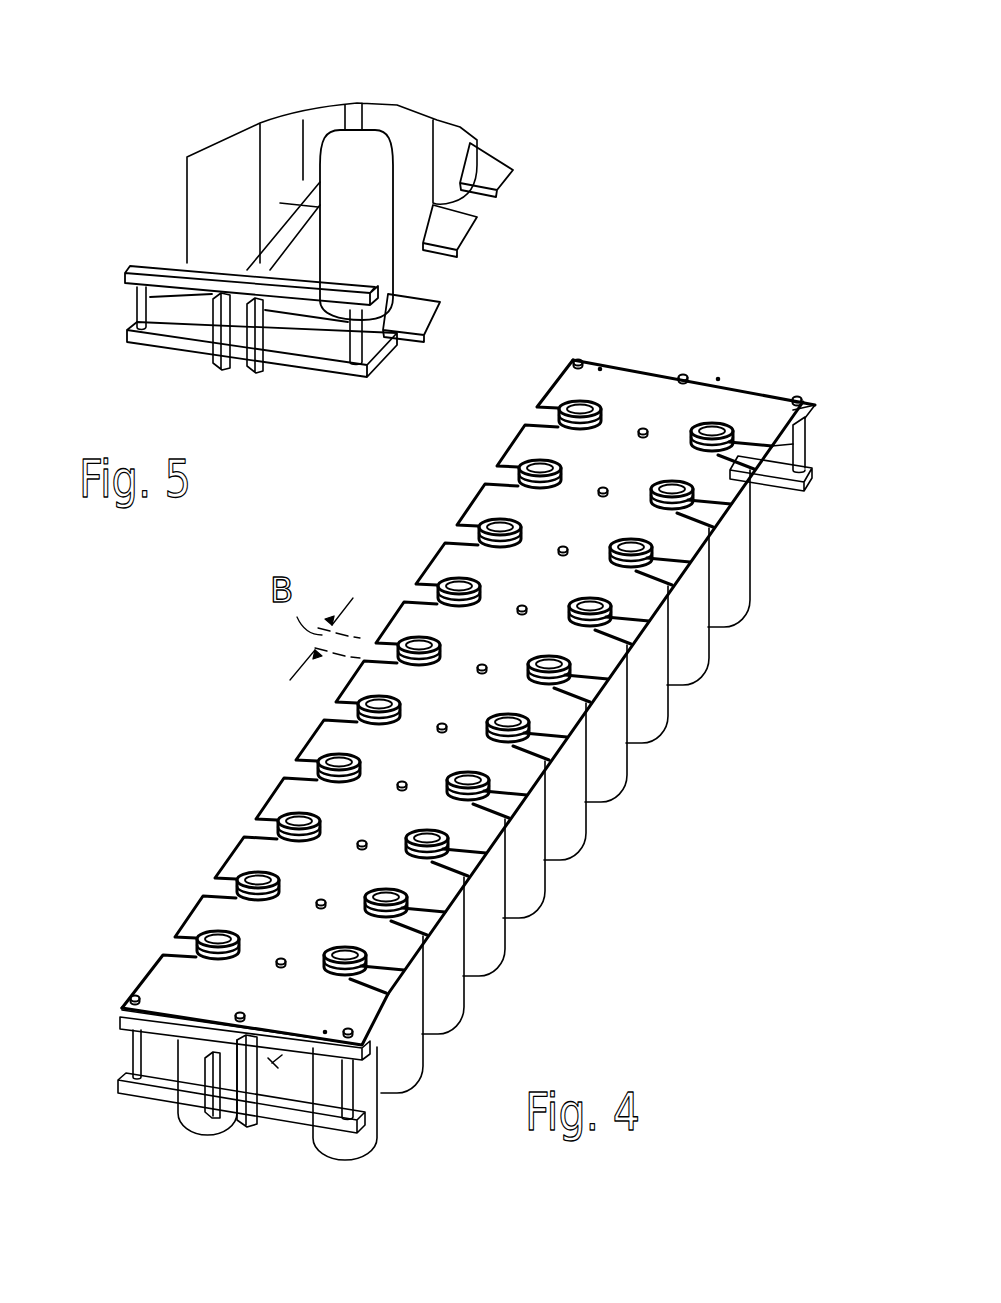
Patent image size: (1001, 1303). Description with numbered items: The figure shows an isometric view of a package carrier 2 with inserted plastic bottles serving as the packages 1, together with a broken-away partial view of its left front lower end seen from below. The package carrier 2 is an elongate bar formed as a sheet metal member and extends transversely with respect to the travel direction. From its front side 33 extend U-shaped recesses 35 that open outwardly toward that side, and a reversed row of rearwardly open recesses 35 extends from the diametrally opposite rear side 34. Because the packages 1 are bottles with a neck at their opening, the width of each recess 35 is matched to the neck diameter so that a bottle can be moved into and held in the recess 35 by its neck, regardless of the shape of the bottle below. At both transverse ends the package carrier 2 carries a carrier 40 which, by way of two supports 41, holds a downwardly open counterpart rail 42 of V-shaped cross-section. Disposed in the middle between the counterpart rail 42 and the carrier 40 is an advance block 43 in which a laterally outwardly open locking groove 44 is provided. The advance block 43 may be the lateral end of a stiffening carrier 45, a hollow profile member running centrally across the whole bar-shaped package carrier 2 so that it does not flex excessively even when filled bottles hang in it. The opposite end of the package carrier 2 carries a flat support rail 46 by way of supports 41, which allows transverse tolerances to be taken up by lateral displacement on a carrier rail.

In FIG. 4, the package 1 is at (707, 762).
In FIG. 5, the package 1 is at (403, 123).
In FIG. 4, the package carrier 2 is at (628, 397).
In FIG. 5, the package carrier 2 is at (492, 164).
In FIG. 4, the front side 33 is at (762, 472).
In FIG. 5, the front side 33 is at (470, 231).
In FIG. 4, the rear side 34 is at (481, 500).
In FIG. 4, the recess 35 is at (310, 756).
In FIG. 5, the recess 35 is at (401, 320).
In FIG. 4, the carrier 40 is at (120, 1015).
In FIG. 5, the carrier 40 is at (318, 365).
In FIG. 4, the support 41 is at (803, 445).
In FIG. 5, the support 41 is at (140, 302).
In FIG. 4, the counterpart rail 42 is at (287, 1112).
In FIG. 5, the counterpart rail 42 is at (142, 264).
In FIG. 4, the advance block 43 is at (205, 1063).
In FIG. 5, the advance block 43 is at (260, 347).
In FIG. 4, the locking groove 44 is at (230, 1090).
In FIG. 5, the locking groove 44 is at (237, 350).
In FIG. 4, the stiffening carrier 45 is at (272, 1063).
In FIG. 5, the stiffening carrier 45 is at (277, 250).
In FIG. 4, the flat support rail 46 is at (812, 478).